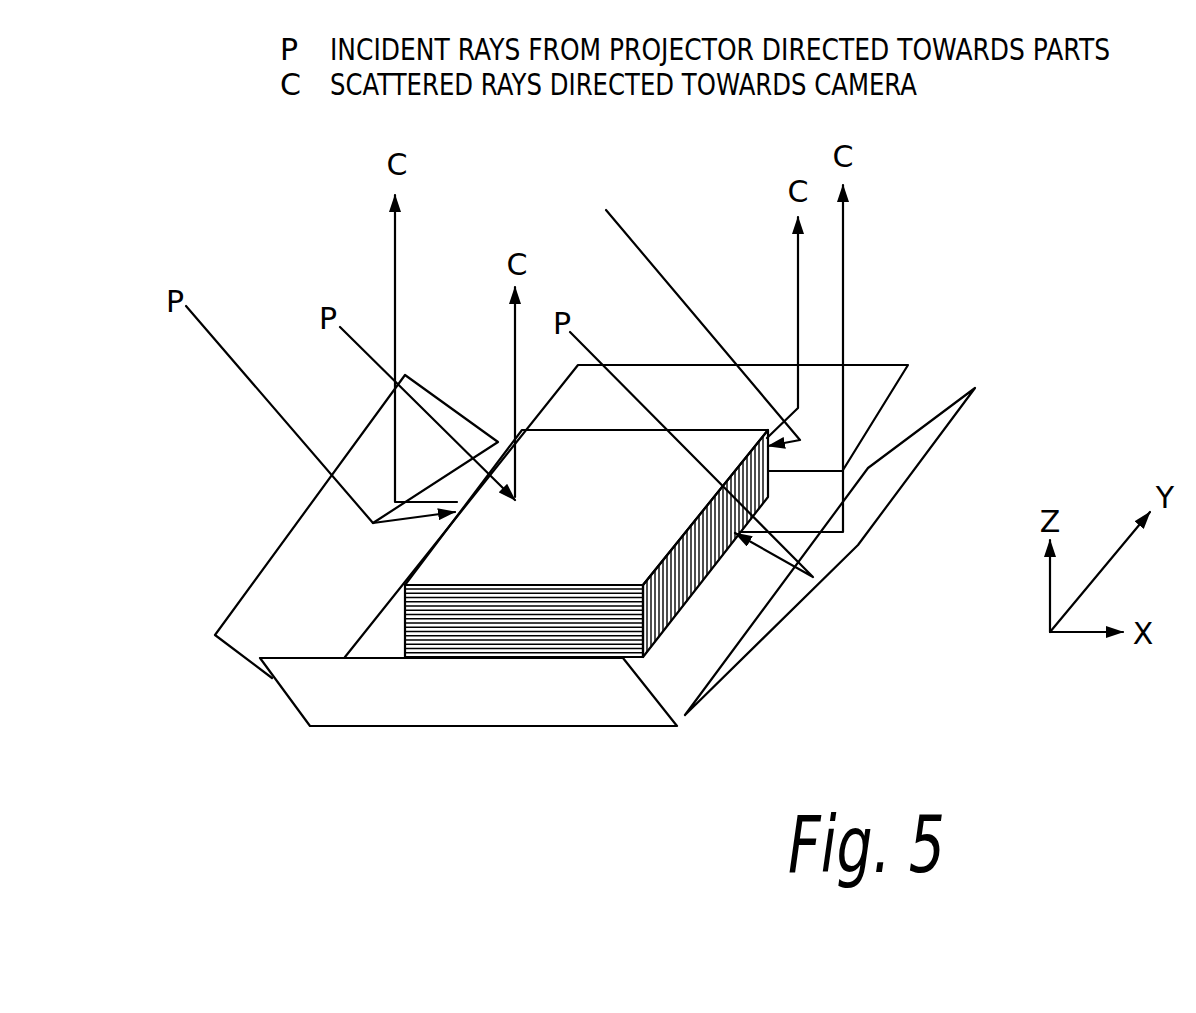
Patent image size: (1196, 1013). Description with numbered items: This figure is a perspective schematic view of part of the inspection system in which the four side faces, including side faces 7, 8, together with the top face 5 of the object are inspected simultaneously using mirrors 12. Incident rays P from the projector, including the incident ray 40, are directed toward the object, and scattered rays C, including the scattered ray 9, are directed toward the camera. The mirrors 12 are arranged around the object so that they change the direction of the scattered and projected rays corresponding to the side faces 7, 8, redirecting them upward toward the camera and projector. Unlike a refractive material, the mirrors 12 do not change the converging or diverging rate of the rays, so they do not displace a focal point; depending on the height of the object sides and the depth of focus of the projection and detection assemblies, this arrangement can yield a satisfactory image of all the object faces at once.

The top face 5 is at (553, 457).
The side face 7 is at (718, 562).
The side face 8 is at (535, 625).
The scattered ray directed towards camera 9 is at (843, 272).
The mirrors 12 is at (300, 567).
The incident ray from projector 40 is at (663, 276).